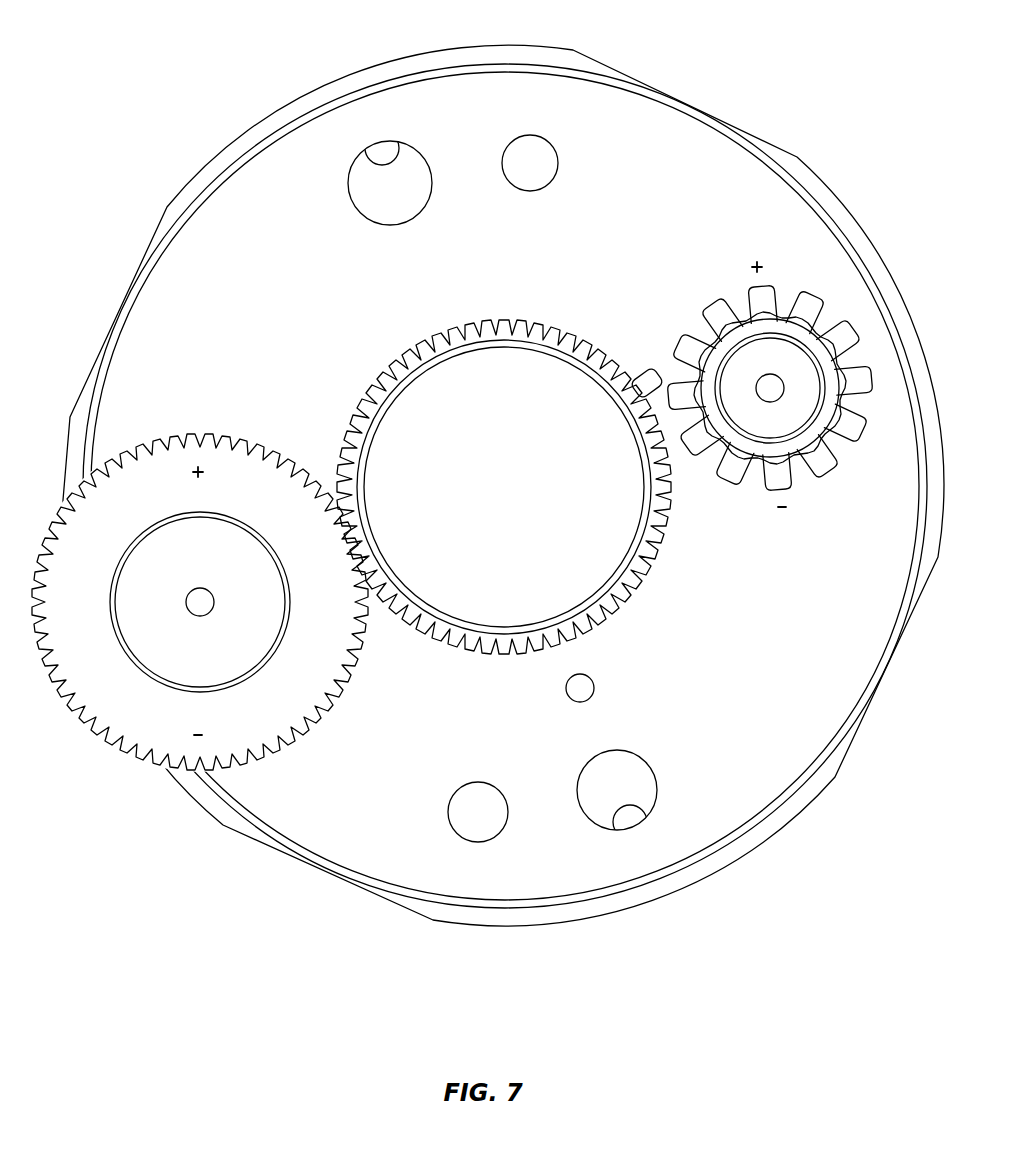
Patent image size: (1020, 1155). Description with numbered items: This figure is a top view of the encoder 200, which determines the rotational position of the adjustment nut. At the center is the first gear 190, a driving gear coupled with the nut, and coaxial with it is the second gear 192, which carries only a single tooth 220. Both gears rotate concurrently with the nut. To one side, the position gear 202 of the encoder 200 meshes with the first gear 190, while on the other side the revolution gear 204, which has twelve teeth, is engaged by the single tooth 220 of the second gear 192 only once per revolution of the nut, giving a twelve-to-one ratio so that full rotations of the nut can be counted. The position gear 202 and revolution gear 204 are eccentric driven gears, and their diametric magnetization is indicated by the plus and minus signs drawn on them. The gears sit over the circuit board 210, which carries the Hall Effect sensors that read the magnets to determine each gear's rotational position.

The first gear 190 is at (380, 377).
The second gear 192 is at (732, 207).
The single tooth 220 is at (647, 381).
The encoder 200 is at (503, 555).
The position gear 202 is at (167, 433).
The revolution gear 204 is at (773, 309).
The circuit board 210 is at (627, 907).